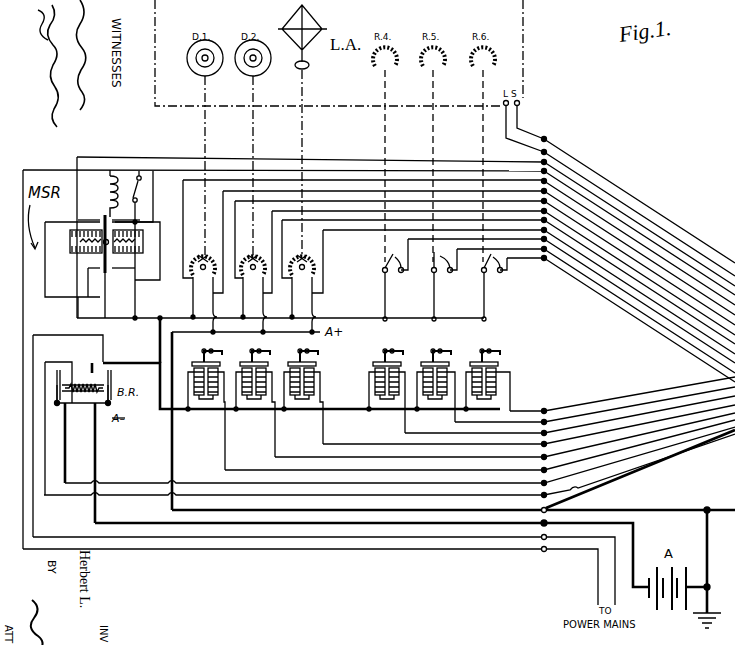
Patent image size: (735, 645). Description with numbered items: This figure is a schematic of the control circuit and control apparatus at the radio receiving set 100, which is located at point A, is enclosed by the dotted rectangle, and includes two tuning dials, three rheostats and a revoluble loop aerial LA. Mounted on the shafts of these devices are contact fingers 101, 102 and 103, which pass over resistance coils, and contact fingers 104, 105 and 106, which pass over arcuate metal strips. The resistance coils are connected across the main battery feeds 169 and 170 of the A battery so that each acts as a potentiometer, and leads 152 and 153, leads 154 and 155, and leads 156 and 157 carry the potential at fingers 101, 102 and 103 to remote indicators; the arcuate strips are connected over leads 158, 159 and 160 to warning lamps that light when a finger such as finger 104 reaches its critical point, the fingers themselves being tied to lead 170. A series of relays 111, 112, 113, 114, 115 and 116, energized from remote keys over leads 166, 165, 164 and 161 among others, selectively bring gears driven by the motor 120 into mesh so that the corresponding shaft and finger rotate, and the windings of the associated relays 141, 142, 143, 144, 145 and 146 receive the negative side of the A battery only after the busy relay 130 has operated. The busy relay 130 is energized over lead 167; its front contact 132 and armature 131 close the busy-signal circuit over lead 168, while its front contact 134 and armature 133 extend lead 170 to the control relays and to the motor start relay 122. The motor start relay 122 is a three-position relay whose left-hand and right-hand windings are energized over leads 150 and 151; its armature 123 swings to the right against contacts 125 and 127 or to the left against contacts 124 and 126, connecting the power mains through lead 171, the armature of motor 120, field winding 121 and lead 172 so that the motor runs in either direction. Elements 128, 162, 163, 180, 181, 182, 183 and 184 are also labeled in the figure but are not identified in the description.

The receiving set 100 is at (325, 22).
The contact finger 101 is at (202, 286).
The contact finger 102 is at (252, 285).
The contact finger 103 is at (303, 286).
The contact finger 104 is at (372, 262).
The contact finger 105 is at (412, 283).
The contact finger 106 is at (487, 288).
The relay 111 is at (205, 409).
The relay 112 is at (253, 409).
The relay 113 is at (301, 409).
The relay 114 is at (386, 409).
The relay 115 is at (434, 409).
The relay 116 is at (483, 409).
The motor 120 is at (140, 163).
The field winding 121 is at (98, 163).
The motor start relay 122 is at (74, 241).
The armature 123 is at (80, 258).
The contact 124 is at (90, 216).
The contact 125 is at (124, 225).
The contact 126 is at (94, 276).
The contact 127 is at (119, 270).
The armature 128 is at (112, 262).
The busy relay 130 is at (62, 388).
The armature 131 is at (75, 363).
The front contact 132 is at (98, 364).
The armature 133 is at (121, 370).
The front contact 134 is at (110, 355).
The relay 141 is at (200, 347).
The relay 142 is at (250, 347).
The relay 143 is at (305, 347).
The relay 144 is at (380, 347).
The relay 145 is at (428, 347).
The relay 146 is at (478, 347).
The lead 150 is at (312, 156).
The lead 151 is at (285, 165).
The lead 152 is at (365, 222).
The lead 153 is at (380, 235).
The lead 154 is at (391, 233).
The lead 155 is at (405, 245).
The lead 156 is at (414, 242).
The lead 157 is at (429, 254).
The lead 158 is at (474, 248).
The lead 159 is at (498, 253).
The lead 160 is at (523, 263).
The lead 161 is at (621, 395).
The conductor 162 is at (595, 406).
The conductor 163 is at (570, 416).
The lead 164 is at (529, 426).
The lead 165 is at (505, 436).
The lead 166 is at (480, 446).
The lead 167 is at (400, 456).
The lead 168 is at (389, 466).
The main battery feed 169 is at (453, 471).
The main battery feed lead 170 is at (372, 548).
The lead 171 is at (324, 564).
The lead 172 is at (310, 570).
The line switch conductor 180 is at (503, 112).
The line switch conductor 181 is at (520, 108).
The cable 182 is at (620, 188).
The cable 183 is at (644, 212).
The coil 184 is at (99, 196).